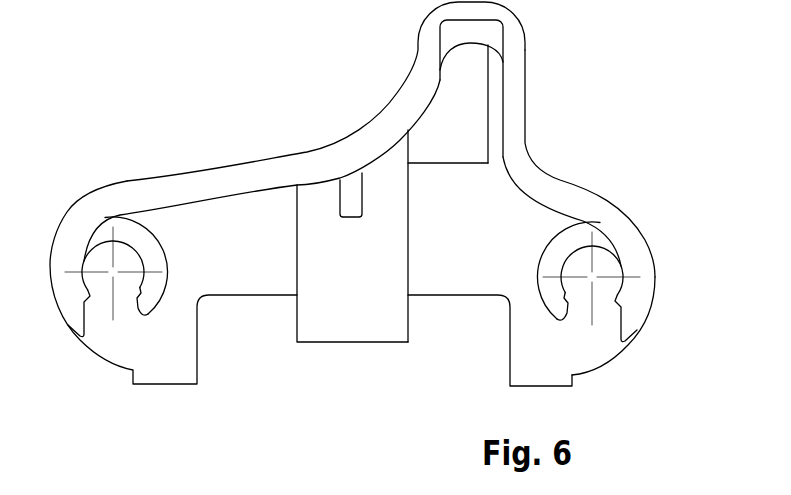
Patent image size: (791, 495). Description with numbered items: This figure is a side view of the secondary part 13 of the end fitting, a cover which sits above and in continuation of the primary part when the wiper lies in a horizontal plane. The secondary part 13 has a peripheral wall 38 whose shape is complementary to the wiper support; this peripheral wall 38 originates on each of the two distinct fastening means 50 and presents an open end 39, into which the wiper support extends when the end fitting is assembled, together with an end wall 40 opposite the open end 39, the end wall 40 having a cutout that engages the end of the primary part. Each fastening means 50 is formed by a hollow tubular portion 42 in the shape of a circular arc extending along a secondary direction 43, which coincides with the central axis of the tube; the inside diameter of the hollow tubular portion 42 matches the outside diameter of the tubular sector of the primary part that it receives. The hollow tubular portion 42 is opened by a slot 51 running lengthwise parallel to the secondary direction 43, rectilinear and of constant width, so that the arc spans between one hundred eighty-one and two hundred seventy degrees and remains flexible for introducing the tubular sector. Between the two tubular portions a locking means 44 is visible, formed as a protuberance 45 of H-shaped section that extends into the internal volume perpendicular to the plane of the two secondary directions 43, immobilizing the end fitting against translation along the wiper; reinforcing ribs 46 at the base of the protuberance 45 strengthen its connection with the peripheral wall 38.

The secondary part 13 is at (632, 100).
The peripheral wall 38 is at (417, 97).
The open end 39 is at (472, 222).
The end wall 40 is at (444, 266).
The hollow tubular portion 42 is at (143, 240).
The secondary direction 43 is at (113, 272).
The locking means 44 is at (286, 327).
The protuberance 45 is at (363, 315).
The reinforcing ribs 46 is at (353, 190).
The fastening means 50 is at (169, 240).
The slot 51 is at (123, 305).